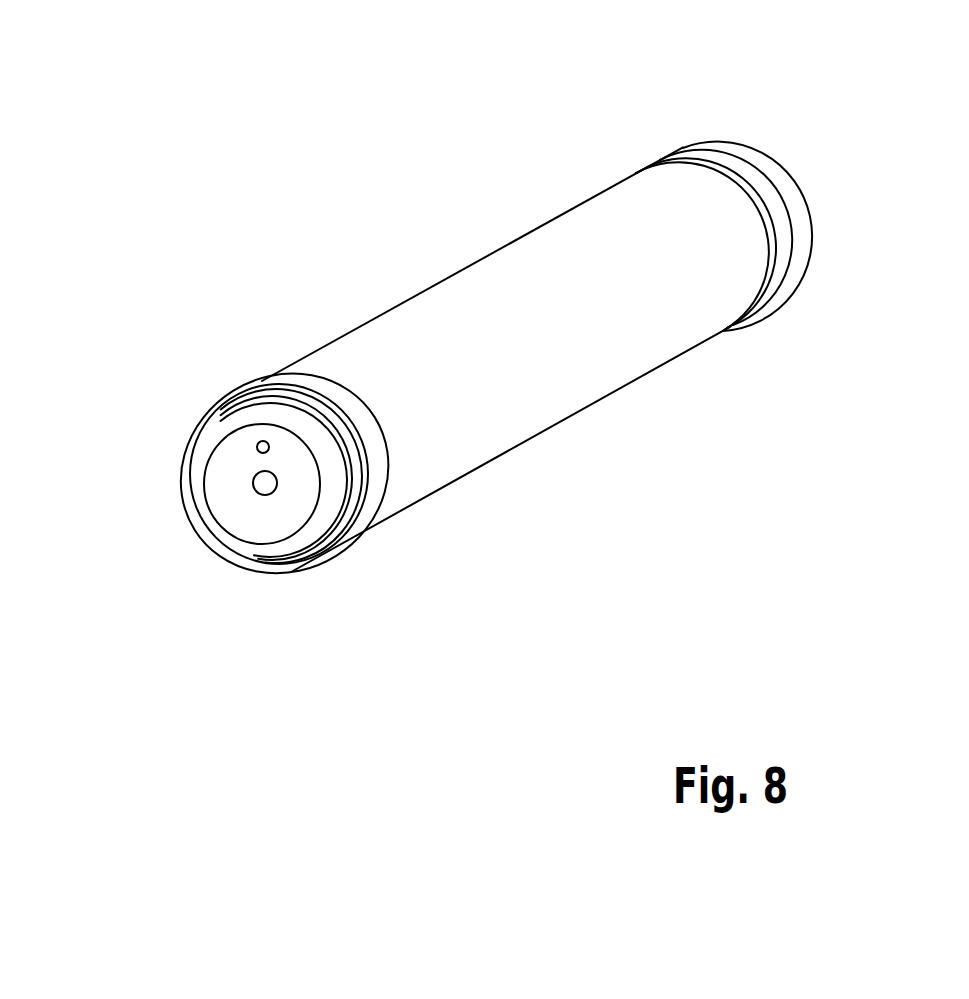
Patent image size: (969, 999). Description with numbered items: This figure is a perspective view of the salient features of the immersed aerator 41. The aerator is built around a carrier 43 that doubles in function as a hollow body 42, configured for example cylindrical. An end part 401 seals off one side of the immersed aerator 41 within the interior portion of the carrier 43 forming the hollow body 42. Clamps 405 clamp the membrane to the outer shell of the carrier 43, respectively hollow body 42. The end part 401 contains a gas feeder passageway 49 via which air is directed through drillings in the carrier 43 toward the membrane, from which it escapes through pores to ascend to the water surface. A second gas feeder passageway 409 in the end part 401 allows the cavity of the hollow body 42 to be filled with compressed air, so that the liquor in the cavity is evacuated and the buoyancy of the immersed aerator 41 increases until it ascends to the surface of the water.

The immersed aerator 41 is at (514, 178).
The hollow body 42 is at (302, 547).
The carrier 43 is at (190, 472).
The gas feeder passageway 49 is at (262, 487).
The end part 401 is at (270, 522).
The clamps 405 is at (322, 378).
The gas feeder passageway 409 is at (257, 443).